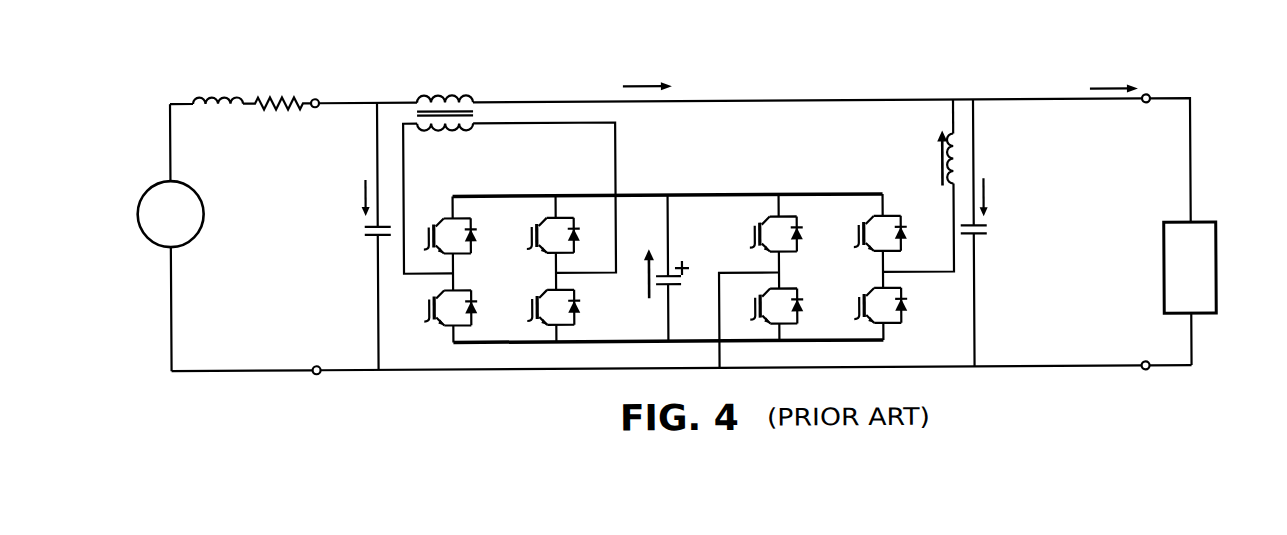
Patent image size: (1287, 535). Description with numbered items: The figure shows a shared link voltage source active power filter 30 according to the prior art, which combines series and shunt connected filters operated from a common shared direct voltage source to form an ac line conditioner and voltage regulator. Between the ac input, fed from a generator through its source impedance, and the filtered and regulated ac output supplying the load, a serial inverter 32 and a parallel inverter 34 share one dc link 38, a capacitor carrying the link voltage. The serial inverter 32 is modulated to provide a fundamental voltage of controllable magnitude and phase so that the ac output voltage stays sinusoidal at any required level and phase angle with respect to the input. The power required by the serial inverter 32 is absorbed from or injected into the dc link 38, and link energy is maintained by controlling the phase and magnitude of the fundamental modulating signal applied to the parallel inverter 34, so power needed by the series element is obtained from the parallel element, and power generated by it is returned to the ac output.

The shared link voltage source active power filter 30 is at (197, 48).
The serial inverter 32 is at (515, 188).
The parallel inverter 34 is at (788, 191).
The dc link 38 is at (690, 244).